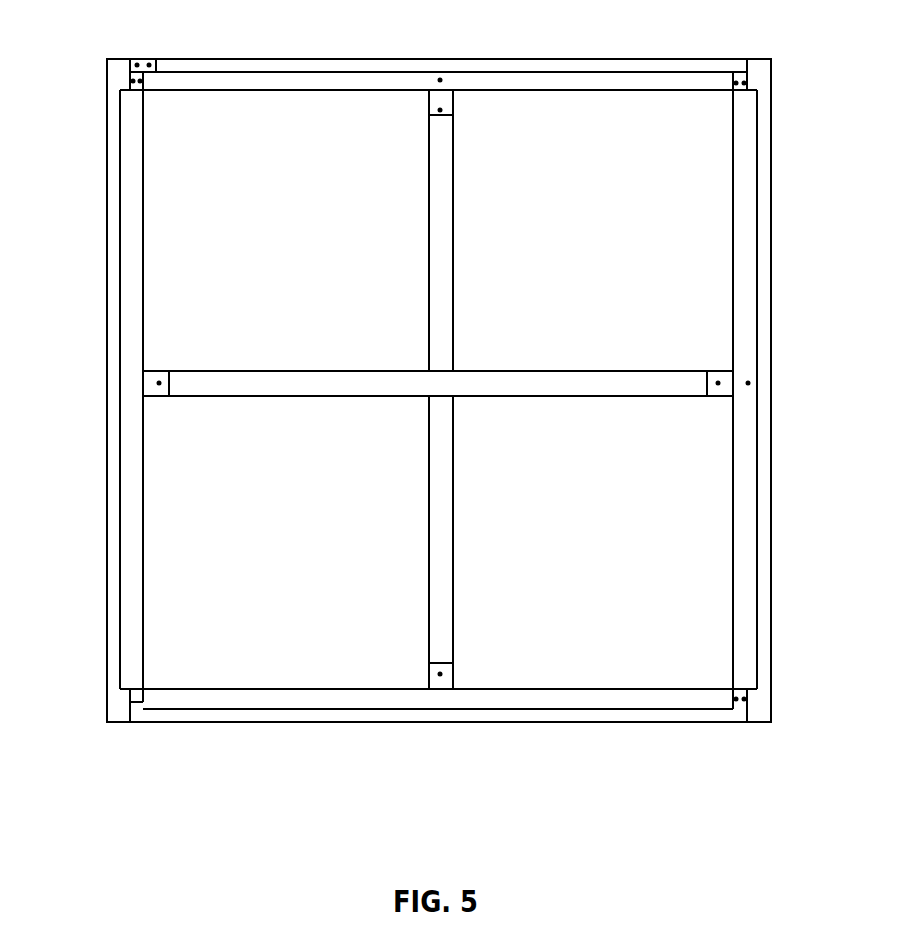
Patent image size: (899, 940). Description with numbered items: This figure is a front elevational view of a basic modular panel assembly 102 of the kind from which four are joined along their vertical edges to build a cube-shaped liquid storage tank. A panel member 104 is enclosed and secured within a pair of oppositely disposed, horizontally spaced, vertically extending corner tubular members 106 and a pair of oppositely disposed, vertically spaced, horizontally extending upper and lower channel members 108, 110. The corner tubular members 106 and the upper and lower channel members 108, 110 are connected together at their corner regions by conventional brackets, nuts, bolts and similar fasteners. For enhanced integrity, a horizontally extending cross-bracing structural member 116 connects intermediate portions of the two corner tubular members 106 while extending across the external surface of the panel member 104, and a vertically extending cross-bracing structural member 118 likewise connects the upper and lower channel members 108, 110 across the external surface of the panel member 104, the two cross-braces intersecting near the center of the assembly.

The panel assembly 102 is at (771, 65).
The panel member 104 is at (318, 264).
The corner tubular member 106 is at (130, 490).
The upper channel member 108 is at (336, 90).
The lower channel member 110 is at (283, 695).
The horizontally extending cross-bracing structural member 116 is at (557, 382).
The vertically extending cross-bracing structural member 118 is at (438, 480).